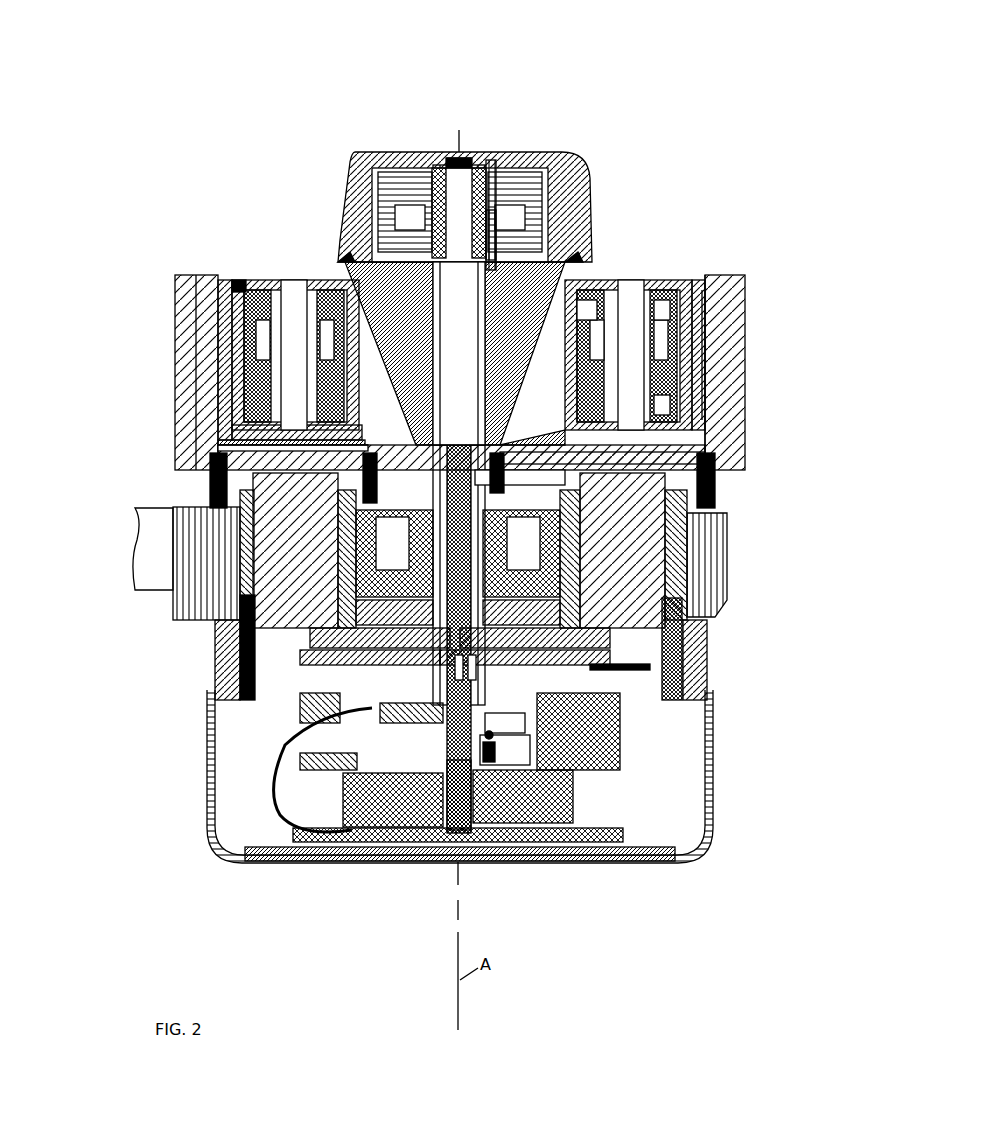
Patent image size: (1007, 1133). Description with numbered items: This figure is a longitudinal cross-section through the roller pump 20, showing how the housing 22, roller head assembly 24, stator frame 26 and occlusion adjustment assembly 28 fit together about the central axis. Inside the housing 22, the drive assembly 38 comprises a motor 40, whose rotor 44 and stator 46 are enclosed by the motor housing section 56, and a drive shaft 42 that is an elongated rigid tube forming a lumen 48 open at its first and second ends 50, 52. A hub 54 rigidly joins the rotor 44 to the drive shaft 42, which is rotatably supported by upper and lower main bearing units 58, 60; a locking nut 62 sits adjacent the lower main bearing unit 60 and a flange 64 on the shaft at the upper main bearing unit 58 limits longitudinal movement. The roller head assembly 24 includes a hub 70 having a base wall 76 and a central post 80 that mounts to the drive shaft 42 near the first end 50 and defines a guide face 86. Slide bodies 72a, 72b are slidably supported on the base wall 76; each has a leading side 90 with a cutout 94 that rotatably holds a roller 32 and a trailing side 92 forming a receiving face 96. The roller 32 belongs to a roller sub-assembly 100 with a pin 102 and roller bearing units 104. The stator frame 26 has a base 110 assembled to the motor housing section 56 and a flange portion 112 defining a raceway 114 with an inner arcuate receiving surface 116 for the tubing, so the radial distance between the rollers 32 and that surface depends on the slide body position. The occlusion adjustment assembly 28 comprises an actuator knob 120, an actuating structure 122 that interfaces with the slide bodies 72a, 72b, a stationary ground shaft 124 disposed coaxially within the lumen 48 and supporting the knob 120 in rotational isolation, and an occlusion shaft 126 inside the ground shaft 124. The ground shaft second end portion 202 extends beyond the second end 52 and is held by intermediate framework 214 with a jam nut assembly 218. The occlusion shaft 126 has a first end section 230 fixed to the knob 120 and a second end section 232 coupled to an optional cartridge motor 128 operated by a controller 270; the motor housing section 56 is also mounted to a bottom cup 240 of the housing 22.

The roller pump 20 is at (590, 55).
The housing 22 is at (200, 645).
The roller head assembly 24 is at (668, 262).
The stator frame 26 is at (168, 278).
The occlusion adjustment assembly 28 is at (486, 138).
The roller 32 is at (232, 330).
The drive assembly 38 is at (700, 545).
The motor 40 is at (560, 590).
The drive shaft 42 is at (640, 605).
The rotor 44 is at (690, 635).
The stator 46 is at (715, 520).
The lumen 48 is at (446, 700).
The first end 50 is at (590, 300).
The second end 52 is at (570, 690).
The hub 54 is at (640, 472).
The motor housing section 56 is at (245, 565).
The upper main bearing unit 58 is at (600, 455).
The lower main bearing unit 60 is at (323, 694).
The locking nut 62 is at (700, 656).
The flange 64 is at (310, 436).
The hub 70 is at (420, 400).
The first slide body 72a is at (583, 262).
The second slide body 72b is at (345, 258).
The base wall 76 is at (250, 438).
The central post 80 is at (420, 400).
The guide face 86 is at (700, 338).
The leading side 90 is at (690, 280).
The trailing side 92 is at (560, 270).
The cutout 94 is at (715, 270).
The receiving face 96 is at (618, 215).
The roller sub-assembly 100 is at (690, 318).
The pin 102 is at (600, 292).
The roller bearing units 104 is at (755, 280).
The base 110 is at (230, 505).
The flange portion 112 is at (192, 370).
The raceway 114 is at (220, 334).
The inner arcuate receiving surface 116 is at (232, 280).
The actuator knob 120 is at (578, 156).
The actuating structure 122 is at (380, 195).
The ground shaft 124 is at (416, 160).
The occlusion shaft 126 is at (455, 160).
The cartridge motor 128 is at (580, 798).
The second end portion 202 is at (470, 712).
The intermediate framework 214 is at (622, 746).
The jam nut assembly 218 is at (495, 760).
The first end section 230 is at (460, 152).
The second end section 232 is at (450, 780).
The bottom cup 240 is at (222, 792).
The controller 270 is at (612, 840).